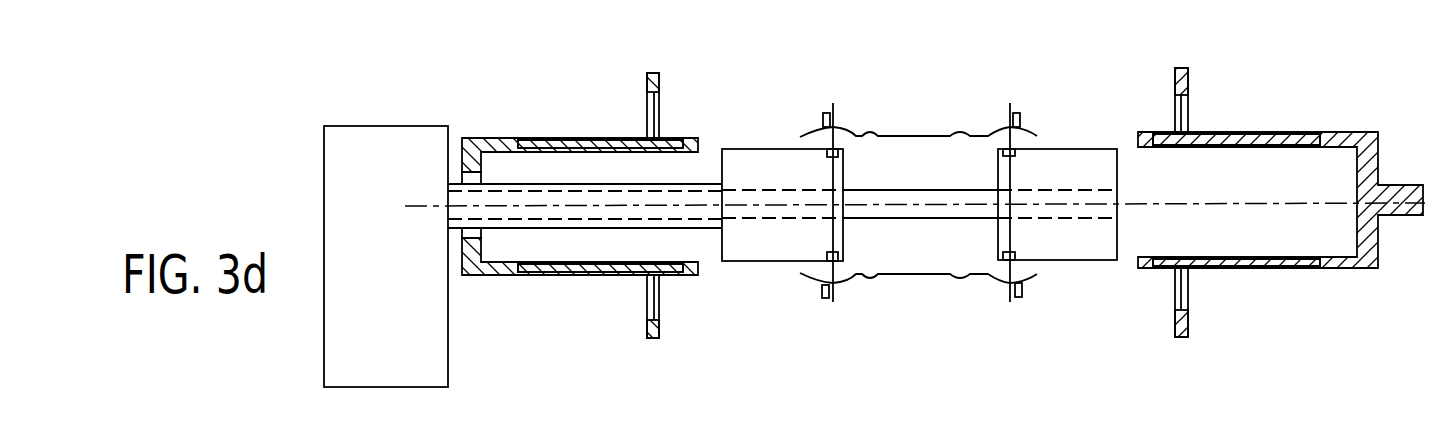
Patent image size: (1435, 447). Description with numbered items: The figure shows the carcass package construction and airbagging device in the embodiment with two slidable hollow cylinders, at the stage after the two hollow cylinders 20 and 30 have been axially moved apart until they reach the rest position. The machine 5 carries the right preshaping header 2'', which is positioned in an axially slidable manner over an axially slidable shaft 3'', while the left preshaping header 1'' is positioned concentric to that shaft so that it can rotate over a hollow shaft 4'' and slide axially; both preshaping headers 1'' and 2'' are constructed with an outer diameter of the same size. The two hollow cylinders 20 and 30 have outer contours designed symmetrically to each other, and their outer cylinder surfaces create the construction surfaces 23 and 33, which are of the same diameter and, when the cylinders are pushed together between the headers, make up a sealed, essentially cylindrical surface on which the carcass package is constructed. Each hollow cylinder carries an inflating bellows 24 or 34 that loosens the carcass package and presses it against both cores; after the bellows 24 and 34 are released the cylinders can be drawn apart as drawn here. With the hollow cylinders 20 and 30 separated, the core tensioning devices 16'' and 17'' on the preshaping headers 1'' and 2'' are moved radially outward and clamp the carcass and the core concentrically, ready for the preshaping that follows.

The machine 5 is at (352, 199).
The hollow shaft 4'' is at (585, 254).
The axially slidable shaft 3'' is at (782, 224).
The left preshaping header 1'' is at (782, 238).
The right preshaping header 2'' is at (1068, 238).
The core tensioning device 16'' is at (796, 202).
The core tensioning device 17'' is at (1048, 202).
The hollow cylinder 20 is at (471, 273).
The inflating bellows 24 is at (545, 137).
The construction surface 23 is at (612, 137).
The hollow cylinder 30 is at (1349, 268).
The inflating bellows 34 is at (1243, 132).
The construction surface 33 is at (1311, 132).